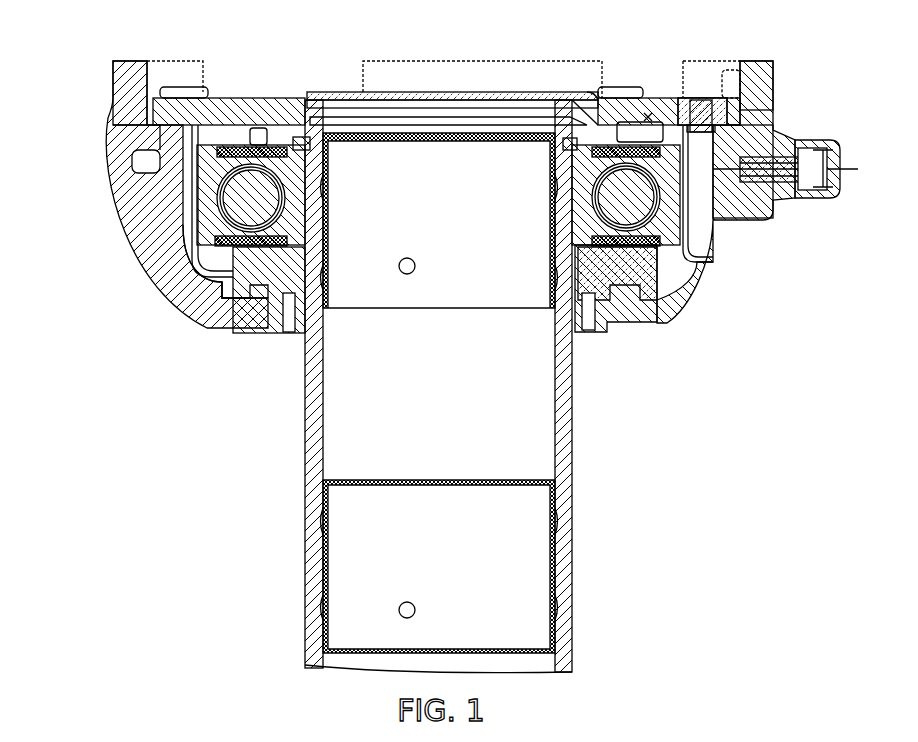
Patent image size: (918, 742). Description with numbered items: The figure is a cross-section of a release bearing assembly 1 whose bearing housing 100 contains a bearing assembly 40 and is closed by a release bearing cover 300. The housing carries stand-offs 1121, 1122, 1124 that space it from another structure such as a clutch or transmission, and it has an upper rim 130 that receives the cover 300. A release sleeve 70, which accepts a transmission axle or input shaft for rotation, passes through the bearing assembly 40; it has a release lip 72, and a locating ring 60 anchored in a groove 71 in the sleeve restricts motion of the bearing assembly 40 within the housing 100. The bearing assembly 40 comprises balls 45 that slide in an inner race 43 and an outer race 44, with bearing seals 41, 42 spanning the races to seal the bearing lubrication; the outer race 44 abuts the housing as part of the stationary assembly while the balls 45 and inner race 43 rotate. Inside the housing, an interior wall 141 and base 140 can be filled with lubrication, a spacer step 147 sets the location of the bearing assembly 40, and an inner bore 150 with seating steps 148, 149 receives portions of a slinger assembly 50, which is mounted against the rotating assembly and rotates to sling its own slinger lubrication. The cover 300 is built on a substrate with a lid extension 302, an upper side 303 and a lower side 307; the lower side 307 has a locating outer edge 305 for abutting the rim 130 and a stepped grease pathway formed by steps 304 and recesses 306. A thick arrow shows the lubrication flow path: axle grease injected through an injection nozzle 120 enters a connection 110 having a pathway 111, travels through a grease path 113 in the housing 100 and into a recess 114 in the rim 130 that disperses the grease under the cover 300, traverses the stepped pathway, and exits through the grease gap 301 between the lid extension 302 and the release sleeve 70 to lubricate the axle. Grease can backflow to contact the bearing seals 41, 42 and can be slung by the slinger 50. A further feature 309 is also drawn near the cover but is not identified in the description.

The release bearing assembly 1 is at (56, 62).
The bearing housing 100 is at (128, 127).
The stand-off 1124 is at (133, 80).
The stand-off 1121 is at (745, 62).
The stand-off 1122 is at (557, 100).
The locating outer edge 305 is at (155, 120).
The upper rim 130 is at (150, 152).
The connection 110 is at (750, 225).
The grease path 113 is at (720, 205).
The pathway 111 is at (775, 140).
The injection nozzle 120 is at (810, 143).
The release bearing cover 300 is at (210, 112).
The upper side 303 is at (190, 100).
The step 304 is at (610, 130).
The lid extension 302 is at (303, 100).
The grease gap 301 is at (507, 115).
The groove 71 is at (318, 130).
The release sleeve 70 is at (385, 120).
The release lip 72 is at (425, 135).
The locating ring 60 is at (296, 130).
The base 140 is at (190, 262).
The outer race 44 is at (255, 205).
The interior wall 141 is at (213, 213).
The bearing seal 41 is at (228, 150).
The inner race 43 is at (270, 150).
The balls 45 is at (210, 245).
The bearing seal 42 is at (192, 258).
The seating step 148 is at (210, 330).
The seating step 149 is at (240, 330).
The inner bore 150 is at (265, 318).
The bearing assembly 40 is at (635, 268).
The spacer step 147 is at (652, 268).
The slinger assembly 50 is at (612, 290).
The recess 306 is at (690, 120).
The recess 114 is at (712, 128).
The lower side 307 is at (705, 130).
The nut 309 is at (648, 118).